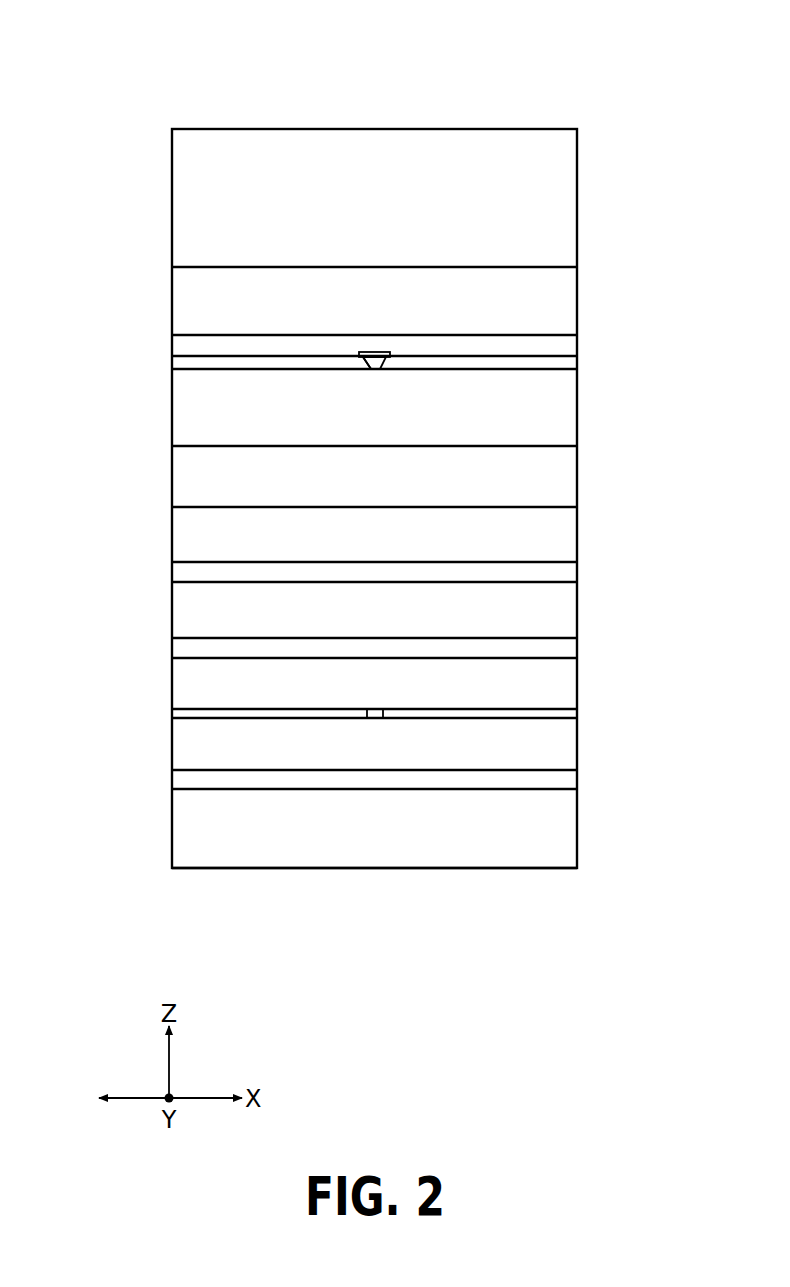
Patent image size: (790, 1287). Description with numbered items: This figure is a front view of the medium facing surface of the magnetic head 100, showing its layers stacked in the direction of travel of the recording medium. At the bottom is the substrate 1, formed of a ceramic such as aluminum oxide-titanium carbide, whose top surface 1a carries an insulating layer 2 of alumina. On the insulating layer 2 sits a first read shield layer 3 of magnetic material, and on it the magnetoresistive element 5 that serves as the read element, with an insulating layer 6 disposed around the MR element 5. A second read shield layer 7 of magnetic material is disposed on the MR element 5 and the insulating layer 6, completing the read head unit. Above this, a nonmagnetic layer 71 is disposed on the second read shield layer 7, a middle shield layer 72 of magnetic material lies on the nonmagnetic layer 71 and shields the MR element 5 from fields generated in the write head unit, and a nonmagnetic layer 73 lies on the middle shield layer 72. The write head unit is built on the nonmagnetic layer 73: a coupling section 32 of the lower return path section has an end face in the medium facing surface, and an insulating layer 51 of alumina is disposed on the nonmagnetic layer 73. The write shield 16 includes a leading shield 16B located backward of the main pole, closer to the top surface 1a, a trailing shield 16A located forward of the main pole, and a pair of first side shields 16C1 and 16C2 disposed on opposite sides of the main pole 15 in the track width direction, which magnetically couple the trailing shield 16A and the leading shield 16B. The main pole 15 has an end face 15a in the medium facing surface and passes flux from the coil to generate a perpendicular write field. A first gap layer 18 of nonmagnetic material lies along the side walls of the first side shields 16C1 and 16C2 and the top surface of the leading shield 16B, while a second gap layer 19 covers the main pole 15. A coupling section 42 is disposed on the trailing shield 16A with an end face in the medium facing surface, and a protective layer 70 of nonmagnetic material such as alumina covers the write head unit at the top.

The magnetic head 100 is at (373, 82).
The protective layer 70 is at (575, 197).
The coupling section 42 is at (178, 297).
The write shield 16 is at (188, 347).
The trailing shield 16A is at (183, 346).
The first side shield 16C1 is at (183, 361).
The first side shield 16C2 is at (572, 363).
The leading shield 16B is at (572, 393).
The second gap layer 19 is at (359, 352).
The main pole 15 is at (366, 367).
The end face 15a is at (366, 364).
The first gap layer 18 is at (372, 369).
The coupling section 32 is at (572, 481).
The insulating layer 51 is at (572, 538).
The nonmagnetic layer 73 is at (572, 572).
The middle shield layer 72 is at (572, 611).
The nonmagnetic layer 71 is at (572, 650).
The second read shield layer 7 is at (572, 683).
The insulating layer 6 is at (572, 713).
The magnetoresistive element 5 is at (376, 718).
The first read shield layer 3 is at (572, 742).
The insulating layer 2 is at (572, 780).
The substrate 1 is at (572, 830).
The top surface 1a is at (200, 789).